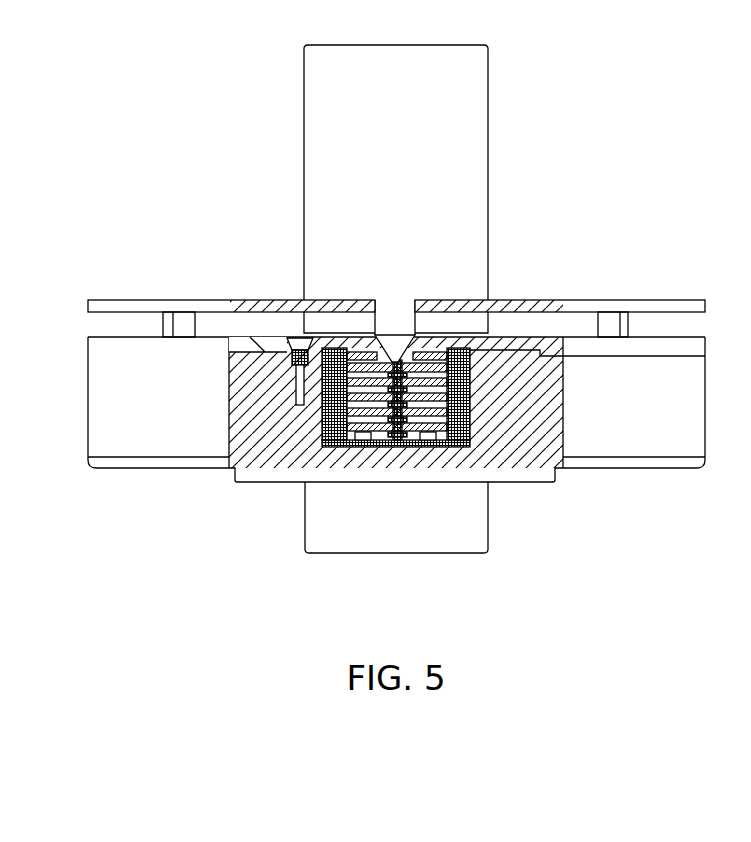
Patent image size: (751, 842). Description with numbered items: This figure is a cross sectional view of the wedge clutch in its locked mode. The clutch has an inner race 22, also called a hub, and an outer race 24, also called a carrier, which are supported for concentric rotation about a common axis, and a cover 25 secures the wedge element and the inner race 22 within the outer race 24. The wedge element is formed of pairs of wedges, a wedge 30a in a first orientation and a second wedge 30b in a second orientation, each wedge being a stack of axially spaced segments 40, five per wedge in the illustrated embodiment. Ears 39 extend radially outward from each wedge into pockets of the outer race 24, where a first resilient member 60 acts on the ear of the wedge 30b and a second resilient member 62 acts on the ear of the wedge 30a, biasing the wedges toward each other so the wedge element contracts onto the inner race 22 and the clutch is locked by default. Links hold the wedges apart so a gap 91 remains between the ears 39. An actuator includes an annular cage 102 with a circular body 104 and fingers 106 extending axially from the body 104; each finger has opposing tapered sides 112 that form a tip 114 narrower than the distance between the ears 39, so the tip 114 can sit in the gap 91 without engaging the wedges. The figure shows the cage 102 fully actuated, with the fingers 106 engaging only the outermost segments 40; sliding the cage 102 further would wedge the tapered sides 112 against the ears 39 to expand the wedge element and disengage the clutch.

The inner race 22 is at (489, 543).
The outer race 24 is at (701, 409).
The cover 25 is at (699, 349).
The wedge 30a is at (443, 437).
The second wedge 30b is at (357, 434).
The ears 39 is at (424, 355).
The segments 40 is at (366, 355).
The first resilient member 60 is at (343, 437).
The second resilient member 62 is at (462, 440).
The gap 91 is at (398, 432).
The annular cage 102 is at (118, 306).
The circular body 104 is at (582, 306).
The fingers 106 is at (407, 331).
The tapered sides 112 is at (384, 360).
The tip 114 is at (378, 430).